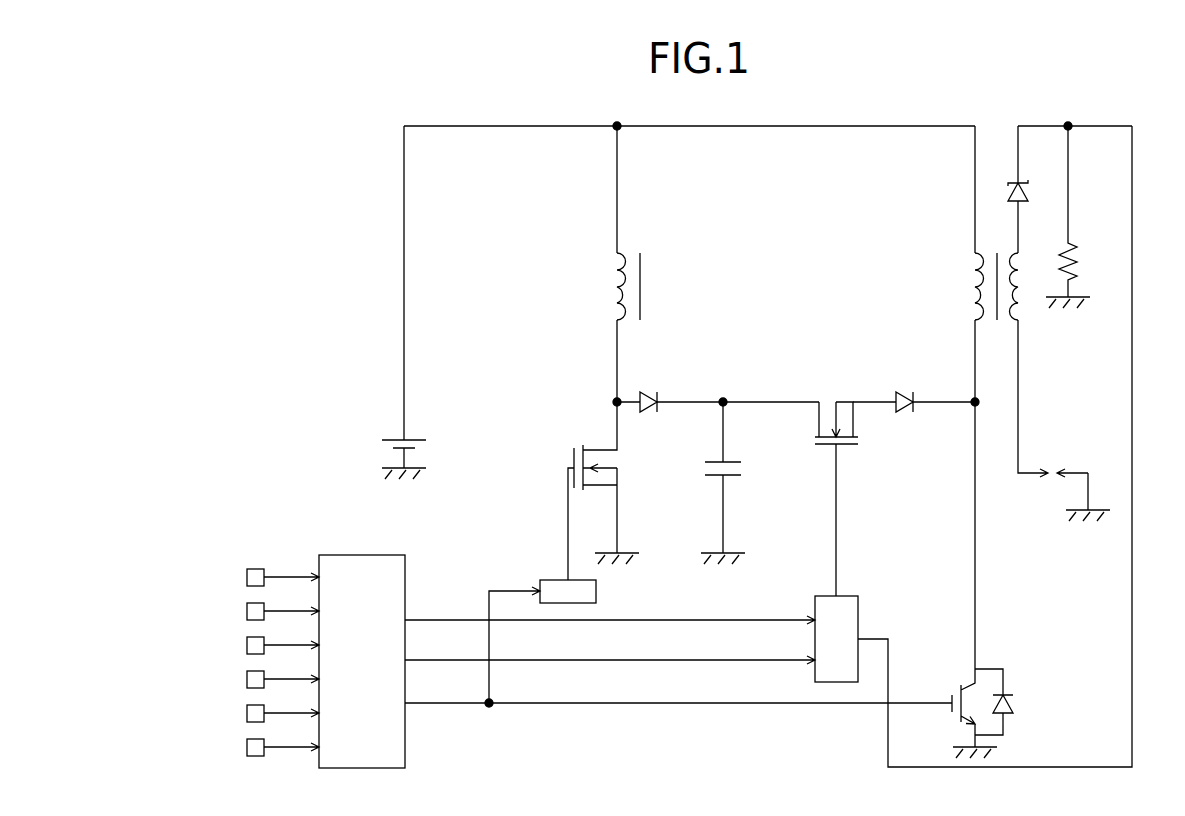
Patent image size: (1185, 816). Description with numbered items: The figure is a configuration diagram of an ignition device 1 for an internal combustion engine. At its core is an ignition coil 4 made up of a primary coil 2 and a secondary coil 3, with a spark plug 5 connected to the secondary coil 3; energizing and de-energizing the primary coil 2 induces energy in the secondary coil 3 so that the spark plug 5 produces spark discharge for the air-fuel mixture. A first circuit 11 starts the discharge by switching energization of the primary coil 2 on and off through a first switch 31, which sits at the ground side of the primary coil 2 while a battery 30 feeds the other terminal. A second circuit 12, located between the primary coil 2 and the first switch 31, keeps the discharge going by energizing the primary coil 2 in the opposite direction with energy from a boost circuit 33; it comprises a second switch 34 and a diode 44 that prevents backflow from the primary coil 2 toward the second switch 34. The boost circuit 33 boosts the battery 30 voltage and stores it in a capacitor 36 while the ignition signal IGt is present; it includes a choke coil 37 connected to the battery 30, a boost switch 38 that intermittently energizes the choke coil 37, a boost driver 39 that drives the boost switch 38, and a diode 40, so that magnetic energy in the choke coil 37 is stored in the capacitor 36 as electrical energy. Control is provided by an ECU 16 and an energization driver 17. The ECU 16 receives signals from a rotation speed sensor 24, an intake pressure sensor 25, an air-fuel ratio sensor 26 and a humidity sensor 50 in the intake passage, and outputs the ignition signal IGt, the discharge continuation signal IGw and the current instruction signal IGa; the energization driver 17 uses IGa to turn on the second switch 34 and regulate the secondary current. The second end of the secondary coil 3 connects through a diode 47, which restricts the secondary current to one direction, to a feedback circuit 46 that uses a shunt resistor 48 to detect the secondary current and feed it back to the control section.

The ignition device 1 is at (1097, 108).
The primary coil 2 is at (977, 266).
The secondary coil 3 is at (1019, 266).
The ignition coil 4 is at (1000, 237).
The spark plug 5 is at (1059, 463).
The first circuit 11 is at (999, 589).
The second circuit 12 is at (834, 384).
The electronic control unit (ECU) 16 is at (385, 555).
The energization driver 17 is at (859, 614).
The rotation speed sensor 24 is at (246, 611).
The intake pressure sensor 25 is at (246, 645).
The air-fuel ratio sensor 26 is at (246, 679).
The battery 30 is at (410, 441).
The first switch 31 is at (944, 694).
The boost circuit 33 is at (589, 285).
The second switch 34 is at (830, 447).
The capacitor 36 is at (718, 478).
The choke coil 37 is at (624, 254).
The boost switch 38 is at (575, 447).
The boost driver 39 is at (597, 600).
The diode 40 is at (651, 408).
The diode 44 is at (905, 412).
The feedback (F/B) circuit 46 is at (1145, 346).
The diode 47 is at (1029, 191).
The shunt resistor 48 is at (1079, 256).
The humidity sensor 50 is at (246, 577).